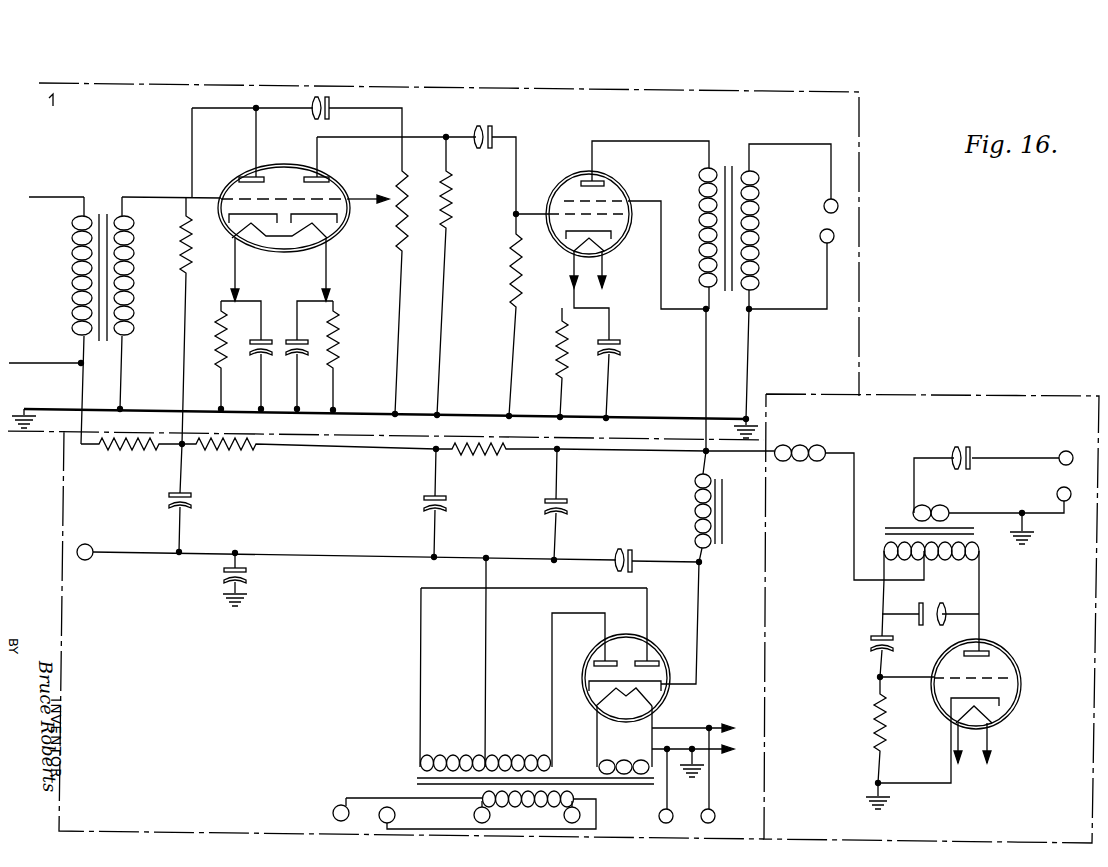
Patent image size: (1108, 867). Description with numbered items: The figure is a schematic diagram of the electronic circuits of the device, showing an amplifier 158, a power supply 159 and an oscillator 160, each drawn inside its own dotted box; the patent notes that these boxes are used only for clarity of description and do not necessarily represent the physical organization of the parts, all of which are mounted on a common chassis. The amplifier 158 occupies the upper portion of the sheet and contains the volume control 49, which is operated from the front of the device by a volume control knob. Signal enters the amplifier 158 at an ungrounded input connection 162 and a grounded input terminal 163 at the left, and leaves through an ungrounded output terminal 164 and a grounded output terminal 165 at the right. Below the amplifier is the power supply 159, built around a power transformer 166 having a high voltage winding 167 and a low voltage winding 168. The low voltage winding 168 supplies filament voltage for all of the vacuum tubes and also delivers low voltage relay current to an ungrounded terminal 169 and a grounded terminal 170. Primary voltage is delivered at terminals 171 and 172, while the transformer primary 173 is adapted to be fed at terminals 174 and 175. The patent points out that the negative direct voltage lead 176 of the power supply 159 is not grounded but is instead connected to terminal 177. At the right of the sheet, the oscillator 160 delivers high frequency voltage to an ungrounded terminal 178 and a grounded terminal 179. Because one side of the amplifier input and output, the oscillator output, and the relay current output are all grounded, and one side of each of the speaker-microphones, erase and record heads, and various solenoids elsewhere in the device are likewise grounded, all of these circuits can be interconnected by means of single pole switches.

The volume control 49 is at (392, 196).
The amplifier 158 is at (130, 99).
The power supply 159 is at (281, 633).
The oscillator 160 is at (1010, 415).
The ungrounded input connection 162 is at (22, 259).
The grounded input terminal 163 is at (18, 284).
The ungrounded output terminal 164 is at (824, 206).
The grounded output terminal 165 is at (821, 242).
The power transformer 166 is at (535, 771).
The high voltage winding 167 is at (447, 755).
The low voltage winding 168 is at (636, 743).
The ungrounded terminal 169 is at (712, 819).
The grounded terminal 170 is at (660, 815).
The terminal 171 is at (335, 812).
The terminal 172 is at (396, 814).
The transformer primary 173 is at (597, 800).
The terminal 174 is at (491, 814).
The terminal 175 is at (566, 815).
The negative direct voltage lead 176 is at (153, 554).
The terminal 177 is at (89, 541).
The ungrounded terminal 178 is at (1059, 453).
The grounded terminal 179 is at (1058, 493).